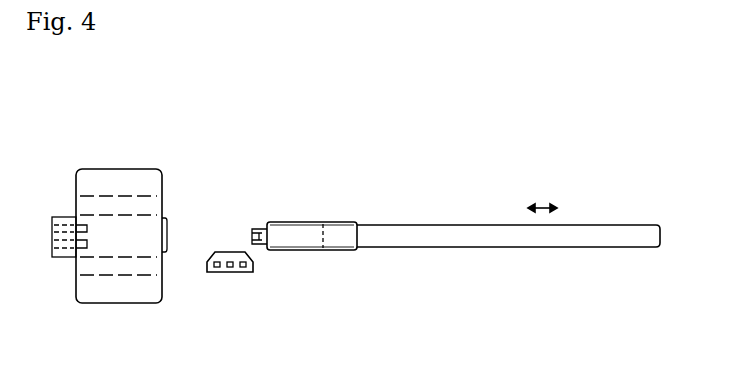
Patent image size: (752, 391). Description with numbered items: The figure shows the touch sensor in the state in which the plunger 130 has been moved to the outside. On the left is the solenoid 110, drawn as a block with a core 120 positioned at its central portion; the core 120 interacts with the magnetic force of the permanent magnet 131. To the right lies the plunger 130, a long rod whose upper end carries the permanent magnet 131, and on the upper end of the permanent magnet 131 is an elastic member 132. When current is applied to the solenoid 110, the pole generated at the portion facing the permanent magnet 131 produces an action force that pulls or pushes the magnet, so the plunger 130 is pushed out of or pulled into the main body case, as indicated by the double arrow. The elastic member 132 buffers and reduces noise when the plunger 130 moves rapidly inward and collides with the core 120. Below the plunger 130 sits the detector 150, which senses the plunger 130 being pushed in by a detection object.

The solenoid 110 is at (123, 178).
The core 120 is at (60, 257).
The plunger 130 is at (442, 237).
The permanent magnet 131 is at (297, 235).
The elastic member 132 is at (263, 225).
The detector 150 is at (237, 268).